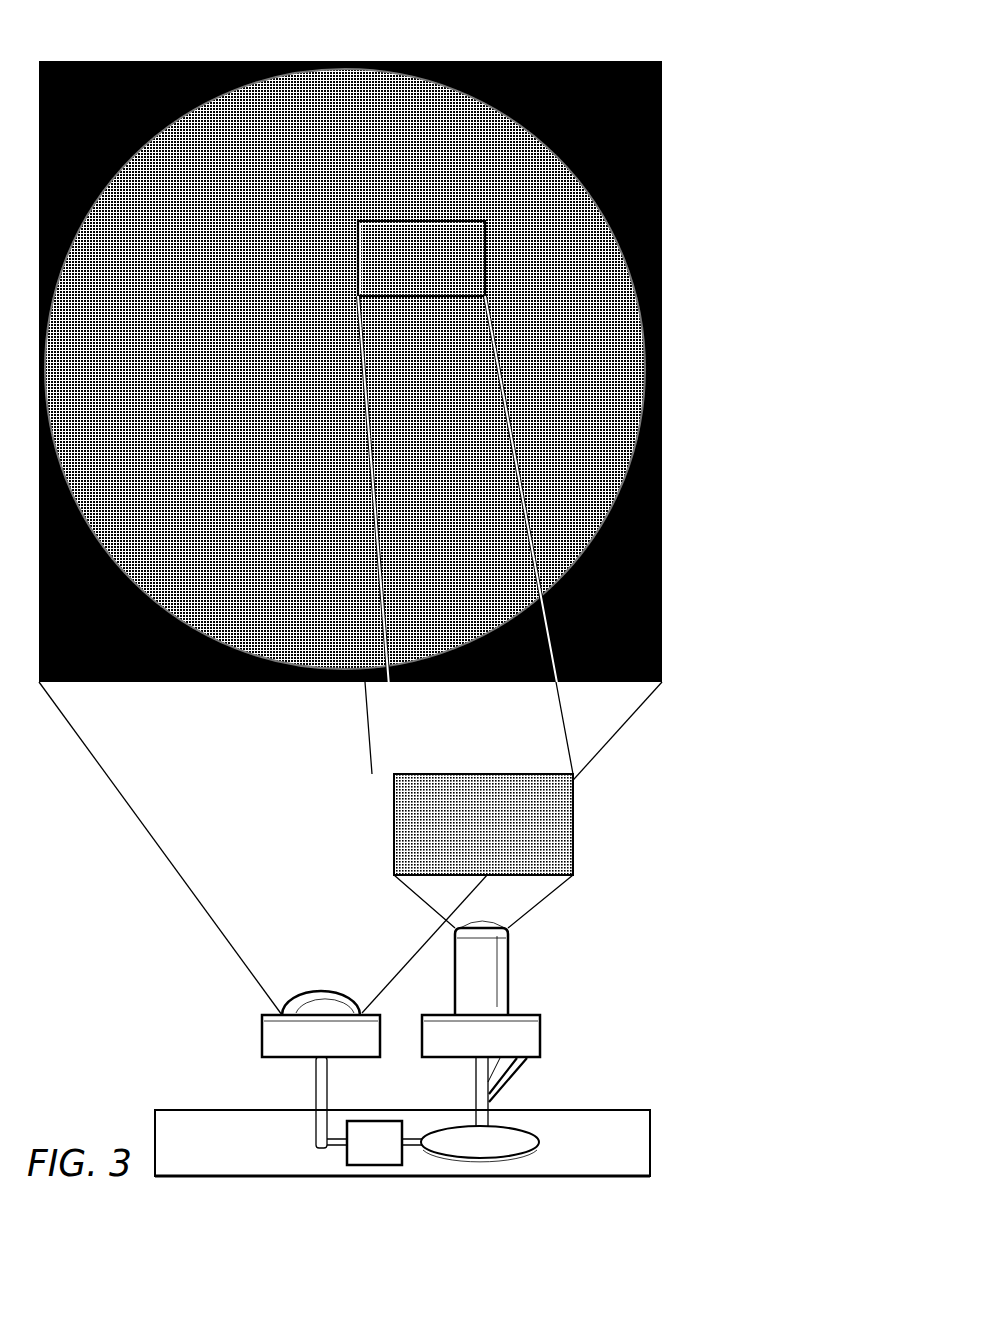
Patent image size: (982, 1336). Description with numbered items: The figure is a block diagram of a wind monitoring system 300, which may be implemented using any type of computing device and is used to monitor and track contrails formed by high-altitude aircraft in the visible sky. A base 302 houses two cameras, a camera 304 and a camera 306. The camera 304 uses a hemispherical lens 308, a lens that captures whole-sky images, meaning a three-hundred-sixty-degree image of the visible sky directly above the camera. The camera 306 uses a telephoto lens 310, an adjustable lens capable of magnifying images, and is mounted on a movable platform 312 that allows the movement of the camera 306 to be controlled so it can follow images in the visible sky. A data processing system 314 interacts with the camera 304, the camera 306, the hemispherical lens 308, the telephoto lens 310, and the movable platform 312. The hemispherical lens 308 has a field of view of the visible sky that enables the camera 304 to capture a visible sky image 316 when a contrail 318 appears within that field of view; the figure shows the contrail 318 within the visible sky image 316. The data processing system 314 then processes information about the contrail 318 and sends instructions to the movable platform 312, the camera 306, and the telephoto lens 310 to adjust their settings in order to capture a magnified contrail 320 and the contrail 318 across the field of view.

The wind monitoring system 300 is at (667, 105).
The base 302 is at (650, 1139).
The camera 304 is at (262, 1032).
The camera 306 is at (540, 1033).
The hemispherical lens 308 is at (320, 990).
The telephoto lens 310 is at (511, 971).
The movable platform 312 is at (539, 1146).
The data processing system 314 is at (373, 1166).
The visible sky image 316 is at (625, 380).
The contrail 318 is at (735, 219).
The magnified contrail 320 is at (623, 842).